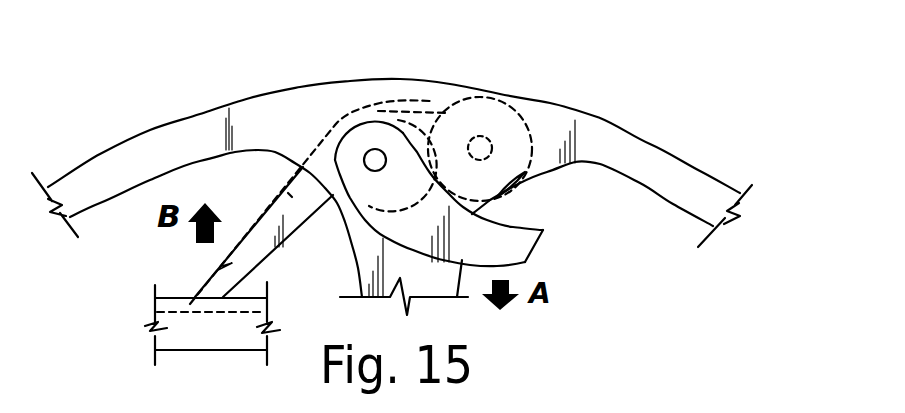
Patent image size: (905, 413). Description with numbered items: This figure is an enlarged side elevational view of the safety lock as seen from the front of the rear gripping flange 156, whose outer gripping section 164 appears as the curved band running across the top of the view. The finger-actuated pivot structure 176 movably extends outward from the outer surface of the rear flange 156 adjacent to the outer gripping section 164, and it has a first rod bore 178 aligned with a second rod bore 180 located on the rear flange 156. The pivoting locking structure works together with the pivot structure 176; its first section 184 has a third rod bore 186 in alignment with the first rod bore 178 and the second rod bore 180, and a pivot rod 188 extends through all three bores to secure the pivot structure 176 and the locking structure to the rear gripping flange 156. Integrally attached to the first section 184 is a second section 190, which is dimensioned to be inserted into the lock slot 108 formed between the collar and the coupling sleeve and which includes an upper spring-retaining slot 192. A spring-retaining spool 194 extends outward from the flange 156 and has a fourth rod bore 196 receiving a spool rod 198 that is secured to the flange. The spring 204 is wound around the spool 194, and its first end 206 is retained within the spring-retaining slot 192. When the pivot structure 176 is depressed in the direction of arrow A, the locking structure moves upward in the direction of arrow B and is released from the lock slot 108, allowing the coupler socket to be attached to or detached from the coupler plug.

The lock slot 108 is at (187, 299).
The rear flange 156 is at (429, 188).
The outer gripping section 164 is at (645, 162).
The finger-actuated pivot structure 176 is at (505, 253).
The first rod bore 178 is at (530, 95).
The second rod bore 180 is at (530, 95).
The third rod bore 186 is at (530, 95).
The pivot rod 188 is at (375, 160).
The first section 184 is at (370, 117).
The second section 190 is at (243, 258).
The spring-retaining slot 192 is at (290, 193).
The spring-retaining spool 194 is at (523, 180).
The fourth rod bore 196 is at (620, 123).
The spool rod 198 is at (484, 145).
The spring 204 is at (433, 100).
The first end 206 is at (258, 213).